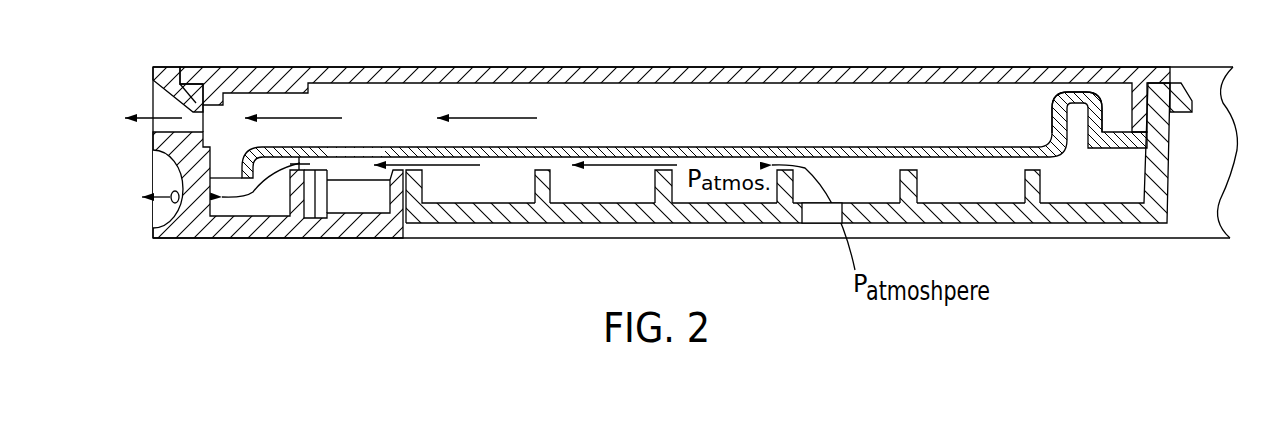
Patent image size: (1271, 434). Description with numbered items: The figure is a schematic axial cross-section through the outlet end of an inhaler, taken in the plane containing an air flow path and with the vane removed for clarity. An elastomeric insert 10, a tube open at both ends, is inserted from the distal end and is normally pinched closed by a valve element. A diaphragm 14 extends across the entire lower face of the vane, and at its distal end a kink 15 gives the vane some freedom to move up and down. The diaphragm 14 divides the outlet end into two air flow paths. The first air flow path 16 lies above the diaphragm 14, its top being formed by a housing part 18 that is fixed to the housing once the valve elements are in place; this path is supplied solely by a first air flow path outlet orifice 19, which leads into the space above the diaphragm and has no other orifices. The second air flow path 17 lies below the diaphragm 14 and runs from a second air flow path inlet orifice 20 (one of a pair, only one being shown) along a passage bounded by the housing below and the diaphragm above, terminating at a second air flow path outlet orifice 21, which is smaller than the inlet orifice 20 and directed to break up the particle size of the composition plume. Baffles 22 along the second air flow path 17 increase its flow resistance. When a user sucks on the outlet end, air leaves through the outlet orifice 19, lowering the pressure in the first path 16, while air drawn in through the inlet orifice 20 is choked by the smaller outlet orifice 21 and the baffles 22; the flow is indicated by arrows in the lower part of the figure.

The elastomeric insert 10 is at (343, 196).
The diaphragm 14 is at (956, 147).
The kink 15 is at (1081, 92).
The first air flow path 16 is at (776, 93).
The second air flow path 17 is at (472, 192).
The housing part 18 is at (560, 67).
The first air flow path outlet orifice 19 is at (162, 102).
The second air flow path inlet orifice 20 is at (813, 213).
The second air flow path outlet orifice 21 is at (165, 213).
The baffles 22 is at (543, 190).